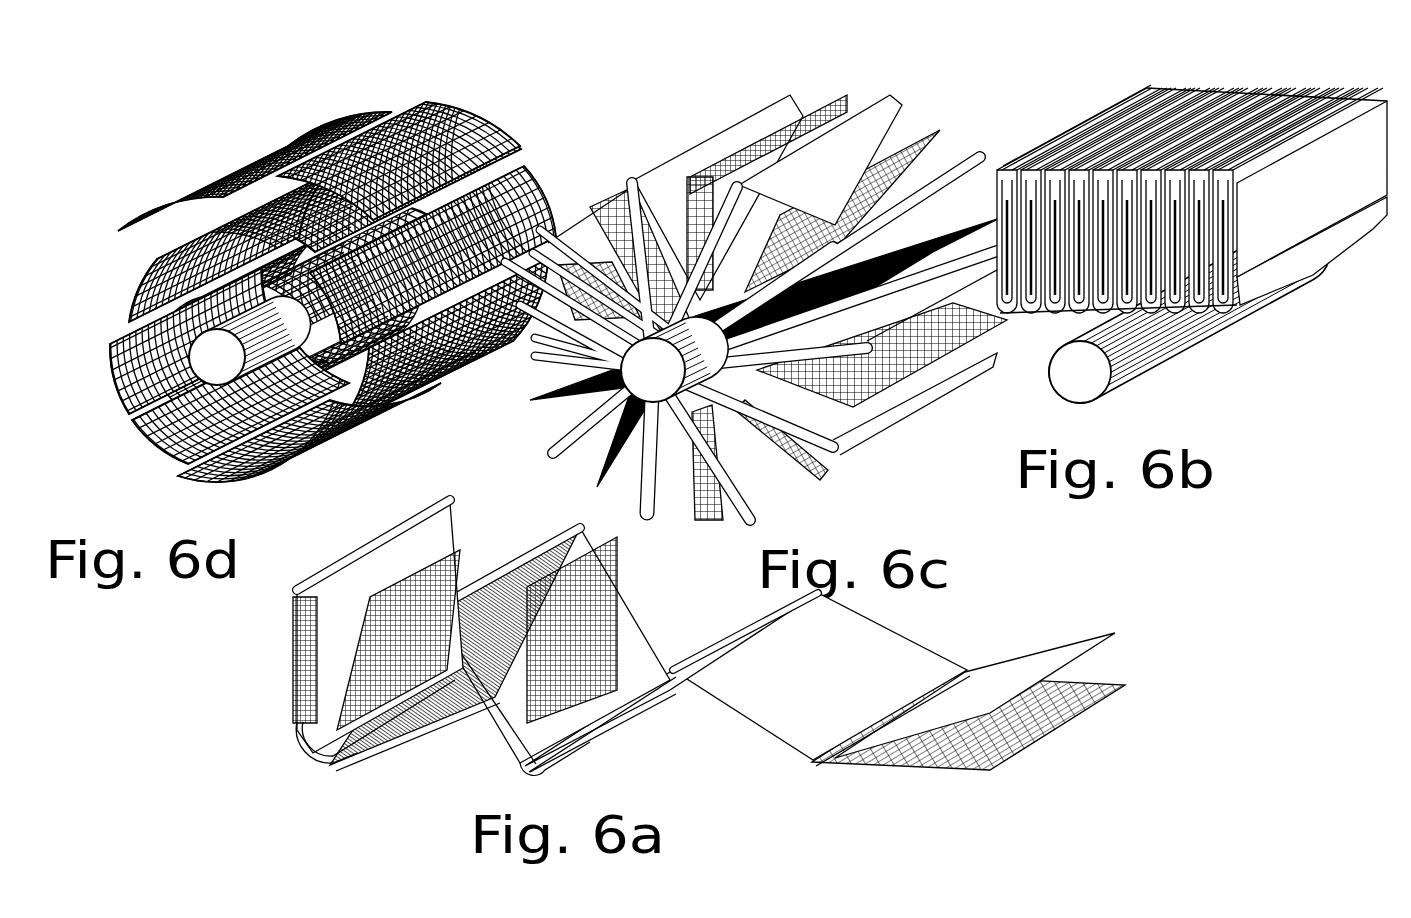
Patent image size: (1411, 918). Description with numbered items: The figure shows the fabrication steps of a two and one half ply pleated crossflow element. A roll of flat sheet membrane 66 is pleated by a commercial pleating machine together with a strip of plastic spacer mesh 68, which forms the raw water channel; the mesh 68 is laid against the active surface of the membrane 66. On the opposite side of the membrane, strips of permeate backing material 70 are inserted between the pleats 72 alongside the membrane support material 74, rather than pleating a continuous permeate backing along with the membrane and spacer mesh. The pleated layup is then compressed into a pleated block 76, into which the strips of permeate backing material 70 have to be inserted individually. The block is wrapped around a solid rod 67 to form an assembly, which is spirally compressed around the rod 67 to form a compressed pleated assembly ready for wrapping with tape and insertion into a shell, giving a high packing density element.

In FIG. 6A, the flat sheet membrane 66 is at (1090, 640).
In FIG. 6B, the core rod 67 is at (1135, 385).
In FIG. 6A, the plastic spacer mesh 68 is at (1030, 741).
In FIG. 6B, the permeate backing material 70 is at (1080, 117).
In FIG. 6A, the permeate backing material 70 is at (618, 552).
In FIG. 6A, the pleats 72 is at (548, 535).
In FIG. 6A, the membrane support material 74 is at (558, 550).
In FIG. 6B, the pleated block 76 is at (1338, 82).